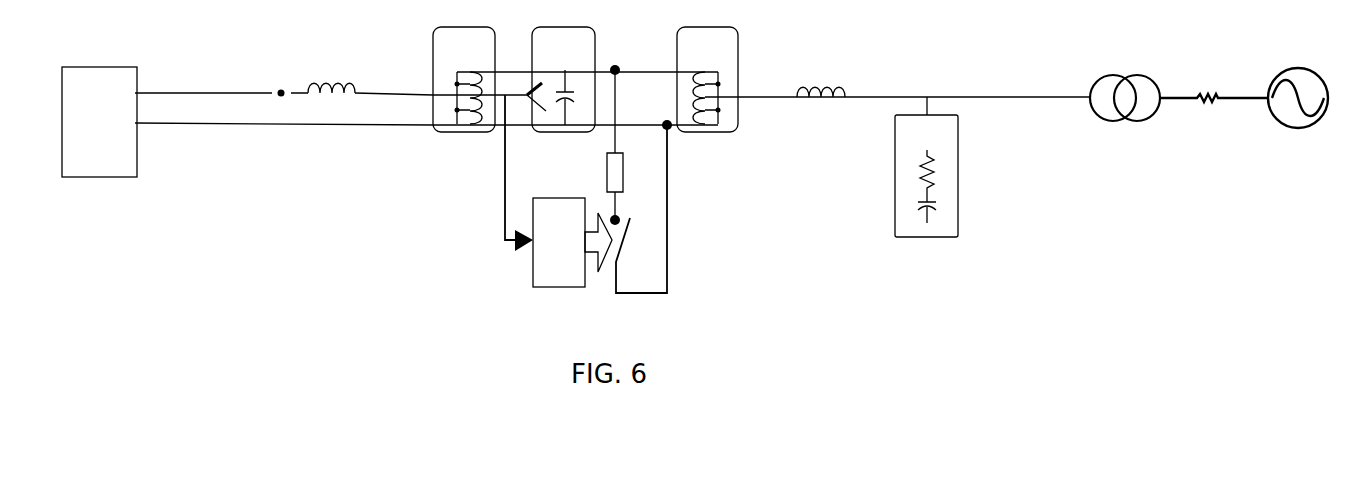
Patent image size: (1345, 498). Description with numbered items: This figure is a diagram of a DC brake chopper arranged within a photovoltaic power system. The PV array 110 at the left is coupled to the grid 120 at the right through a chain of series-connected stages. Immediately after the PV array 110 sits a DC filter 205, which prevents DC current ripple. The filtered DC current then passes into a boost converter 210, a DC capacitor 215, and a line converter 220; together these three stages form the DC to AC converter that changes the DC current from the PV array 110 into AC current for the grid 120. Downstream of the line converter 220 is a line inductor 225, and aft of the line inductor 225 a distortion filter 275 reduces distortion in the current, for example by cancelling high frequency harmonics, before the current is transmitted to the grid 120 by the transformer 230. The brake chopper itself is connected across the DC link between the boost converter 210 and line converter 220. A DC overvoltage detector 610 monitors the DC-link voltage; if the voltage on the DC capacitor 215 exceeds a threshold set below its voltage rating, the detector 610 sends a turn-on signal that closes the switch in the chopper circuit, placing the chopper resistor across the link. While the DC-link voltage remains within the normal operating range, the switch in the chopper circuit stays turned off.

The PV array 110 is at (99, 122).
The grid 120 is at (1286, 82).
The DC filter 205 is at (331, 73).
The boost converter 210 is at (464, 79).
The DC capacitor 215 is at (561, 79).
The line converter 220 is at (707, 79).
The line inductor 225 is at (821, 78).
The transformer 230 is at (1125, 84).
The distortion filter 275 is at (926, 167).
The DC overvoltage detector 610 is at (572, 242).